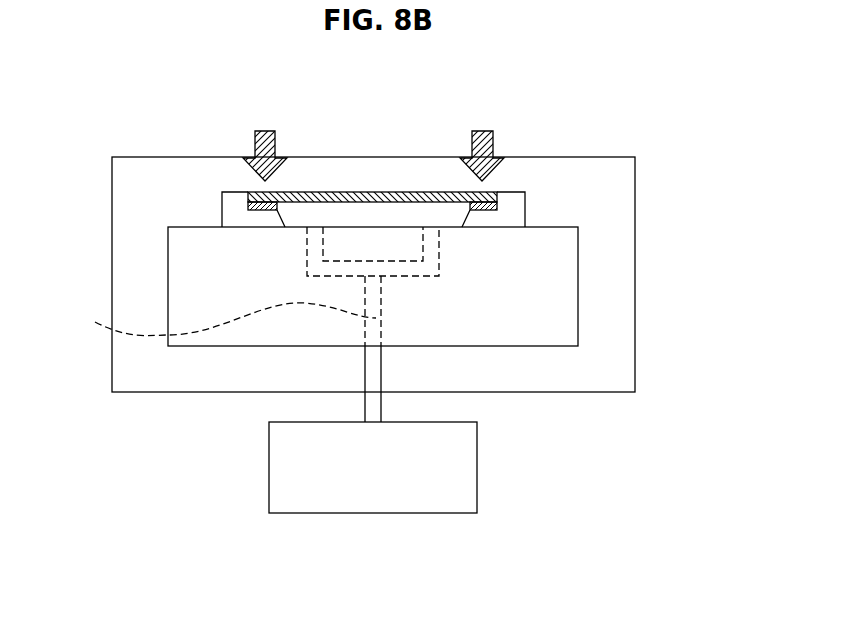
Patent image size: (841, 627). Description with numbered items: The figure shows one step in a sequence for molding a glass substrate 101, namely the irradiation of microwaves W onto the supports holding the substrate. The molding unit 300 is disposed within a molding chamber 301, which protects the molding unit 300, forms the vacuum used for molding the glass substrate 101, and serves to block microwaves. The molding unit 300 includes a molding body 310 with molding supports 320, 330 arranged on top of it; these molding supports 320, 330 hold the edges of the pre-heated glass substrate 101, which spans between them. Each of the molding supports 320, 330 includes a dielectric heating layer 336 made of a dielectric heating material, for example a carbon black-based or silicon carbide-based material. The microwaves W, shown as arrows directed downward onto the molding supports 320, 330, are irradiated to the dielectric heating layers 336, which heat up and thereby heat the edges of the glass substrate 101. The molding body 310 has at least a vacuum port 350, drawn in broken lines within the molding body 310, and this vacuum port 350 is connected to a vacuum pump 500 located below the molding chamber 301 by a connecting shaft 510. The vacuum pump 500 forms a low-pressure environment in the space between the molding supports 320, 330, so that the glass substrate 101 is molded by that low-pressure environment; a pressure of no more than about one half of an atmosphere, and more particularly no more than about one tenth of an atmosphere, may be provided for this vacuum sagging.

The glass substrate 101 is at (372, 193).
The molding unit 300 is at (152, 283).
The molding chamber 301 is at (635, 346).
The molding body 310 is at (553, 290).
The molding support 320 is at (237, 210).
The molding support 330 is at (510, 208).
The dielectric heating layer 336 is at (258, 192).
The vacuum port 350 is at (214, 319).
The vacuum pump 500 is at (372, 483).
The driving shaft 510 is at (373, 371).
The microwaves W is at (373, 144).